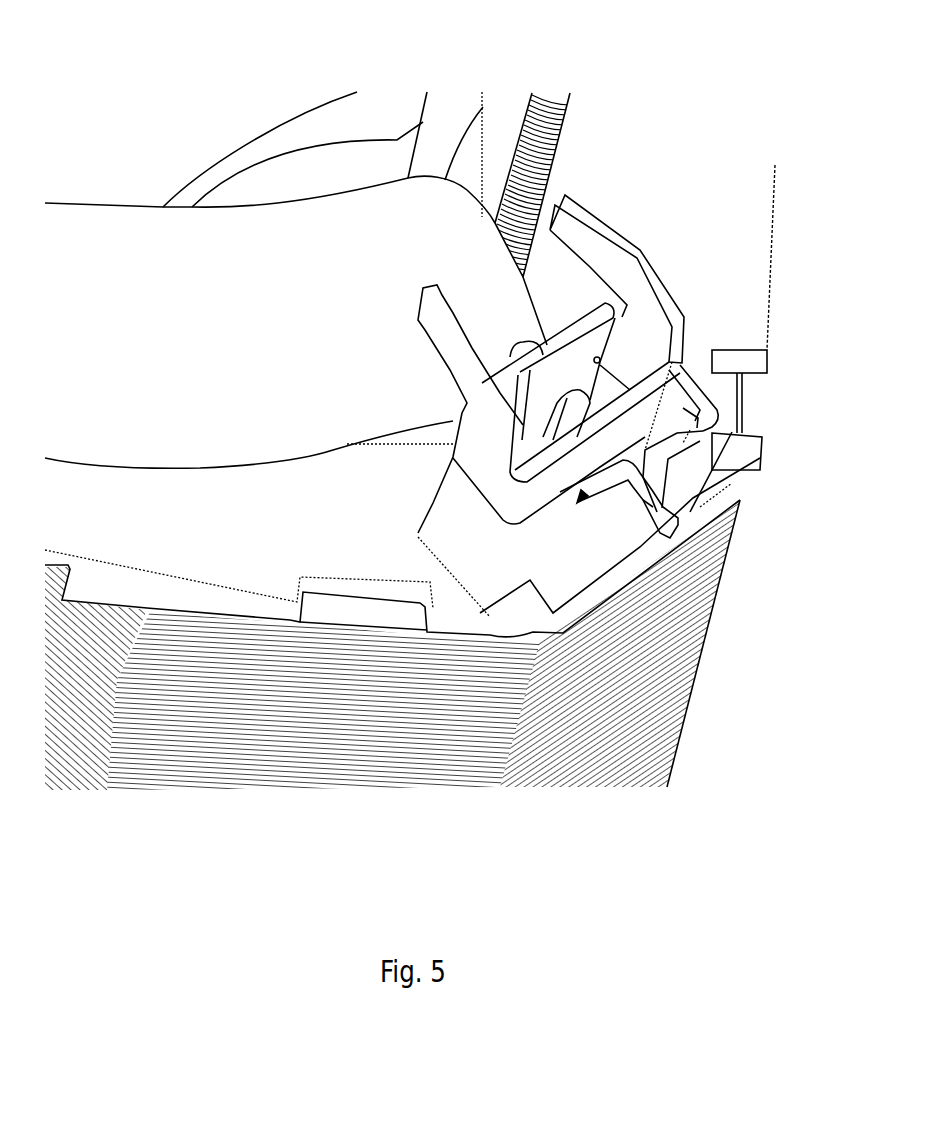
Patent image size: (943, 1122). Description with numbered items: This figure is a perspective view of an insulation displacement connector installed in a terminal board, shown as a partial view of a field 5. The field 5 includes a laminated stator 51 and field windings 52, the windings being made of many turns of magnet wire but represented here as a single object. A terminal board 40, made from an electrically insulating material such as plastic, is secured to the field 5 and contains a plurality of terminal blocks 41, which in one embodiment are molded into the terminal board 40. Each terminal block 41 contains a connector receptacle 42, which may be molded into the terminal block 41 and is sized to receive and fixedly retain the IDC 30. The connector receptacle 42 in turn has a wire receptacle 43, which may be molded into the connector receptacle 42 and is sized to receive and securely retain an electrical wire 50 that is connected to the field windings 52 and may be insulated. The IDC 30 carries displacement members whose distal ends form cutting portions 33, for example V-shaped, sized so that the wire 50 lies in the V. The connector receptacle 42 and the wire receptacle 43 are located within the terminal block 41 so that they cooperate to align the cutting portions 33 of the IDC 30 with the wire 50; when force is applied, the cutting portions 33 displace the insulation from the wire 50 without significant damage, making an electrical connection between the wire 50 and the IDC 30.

The field 5 is at (437, 75).
The insulation displacement connector 30 is at (492, 470).
The cutting portion 33 is at (583, 382).
The terminal board 40 is at (111, 540).
The terminal block 41 is at (465, 563).
The connector receptacle 42 is at (685, 408).
The wire receptacle 43 is at (660, 513).
The electrical wire 50 is at (580, 412).
The laminated stator 51 is at (213, 733).
The field windings 52 is at (225, 273).